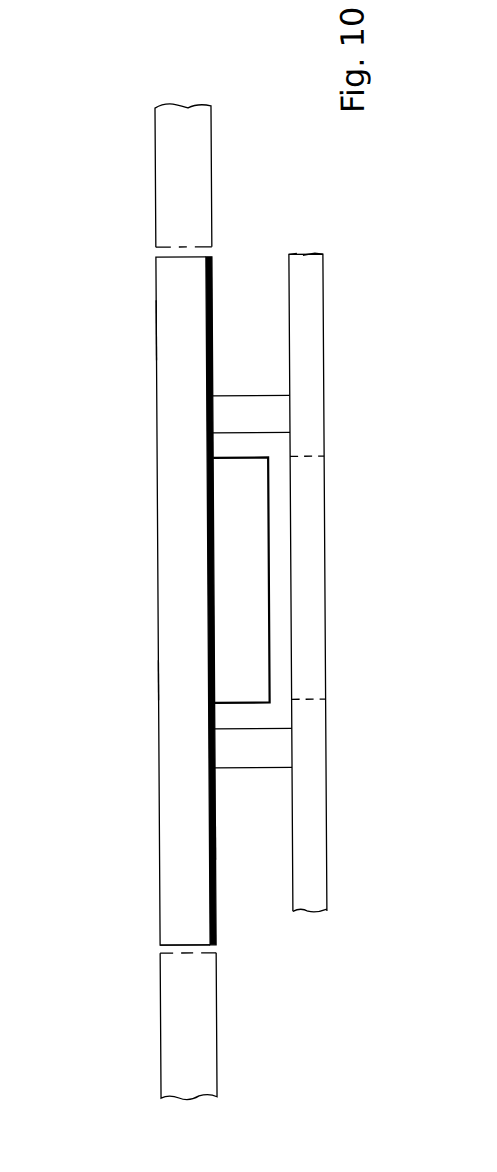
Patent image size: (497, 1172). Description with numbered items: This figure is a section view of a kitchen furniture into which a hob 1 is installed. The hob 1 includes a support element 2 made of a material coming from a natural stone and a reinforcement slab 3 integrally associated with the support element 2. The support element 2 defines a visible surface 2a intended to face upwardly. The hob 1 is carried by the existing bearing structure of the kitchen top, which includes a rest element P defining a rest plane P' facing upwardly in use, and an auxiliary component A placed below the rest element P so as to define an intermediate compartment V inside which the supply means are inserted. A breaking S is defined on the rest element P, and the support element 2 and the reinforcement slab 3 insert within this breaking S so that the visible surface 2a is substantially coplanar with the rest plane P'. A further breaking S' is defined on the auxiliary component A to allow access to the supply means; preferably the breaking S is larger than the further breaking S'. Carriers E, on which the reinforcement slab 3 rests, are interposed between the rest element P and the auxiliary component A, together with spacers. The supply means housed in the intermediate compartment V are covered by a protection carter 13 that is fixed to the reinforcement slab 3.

The hob 1 is at (140, 329).
The support element 2 is at (182, 470).
The visible surface 2a is at (158, 677).
The reinforcement slab 3 is at (209, 603).
The protection carter 13 is at (237, 563).
The carriers E is at (257, 405).
The breaking S is at (131, 934).
The further breaking S' is at (305, 704).
The intermediate compartment V is at (262, 824).
The auxiliary component A is at (300, 848).
The rest element P is at (230, 1025).
The rest plane P' is at (129, 599).